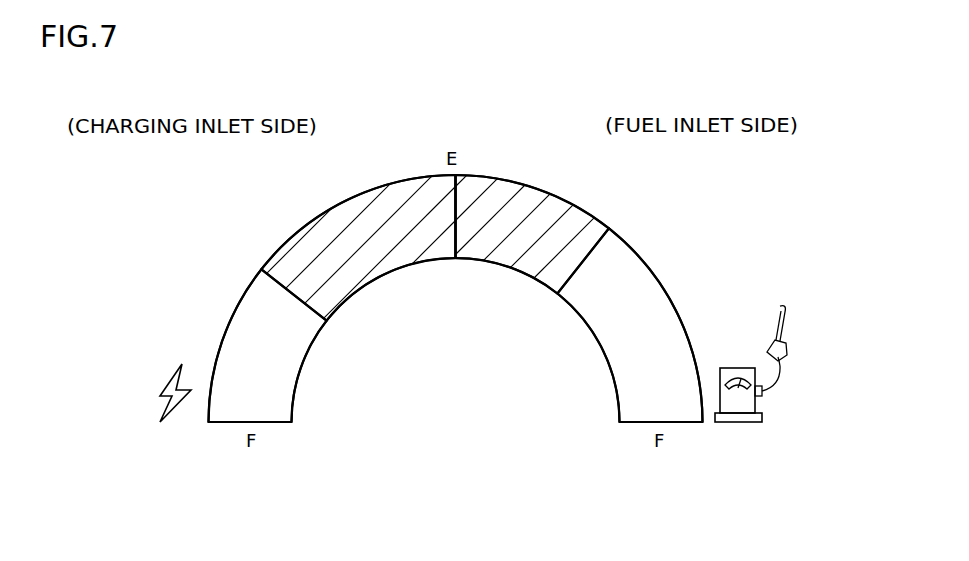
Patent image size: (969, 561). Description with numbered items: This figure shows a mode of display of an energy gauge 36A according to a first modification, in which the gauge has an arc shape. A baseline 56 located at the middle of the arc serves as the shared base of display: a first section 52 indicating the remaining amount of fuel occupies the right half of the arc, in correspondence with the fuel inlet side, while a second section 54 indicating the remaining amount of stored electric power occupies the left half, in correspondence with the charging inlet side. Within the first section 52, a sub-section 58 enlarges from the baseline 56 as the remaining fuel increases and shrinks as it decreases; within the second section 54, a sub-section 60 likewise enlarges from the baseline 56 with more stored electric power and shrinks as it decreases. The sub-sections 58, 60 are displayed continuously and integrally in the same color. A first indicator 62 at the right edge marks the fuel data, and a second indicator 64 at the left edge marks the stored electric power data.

The energy gauge 36A is at (235, 96).
The first section 52 is at (640, 227).
The second section 54 is at (272, 228).
The baseline 56 is at (453, 217).
The sub-section 58 is at (528, 230).
The sub-section 60 is at (348, 228).
The first indicator 62 is at (742, 428).
The second indicator 64 is at (170, 428).